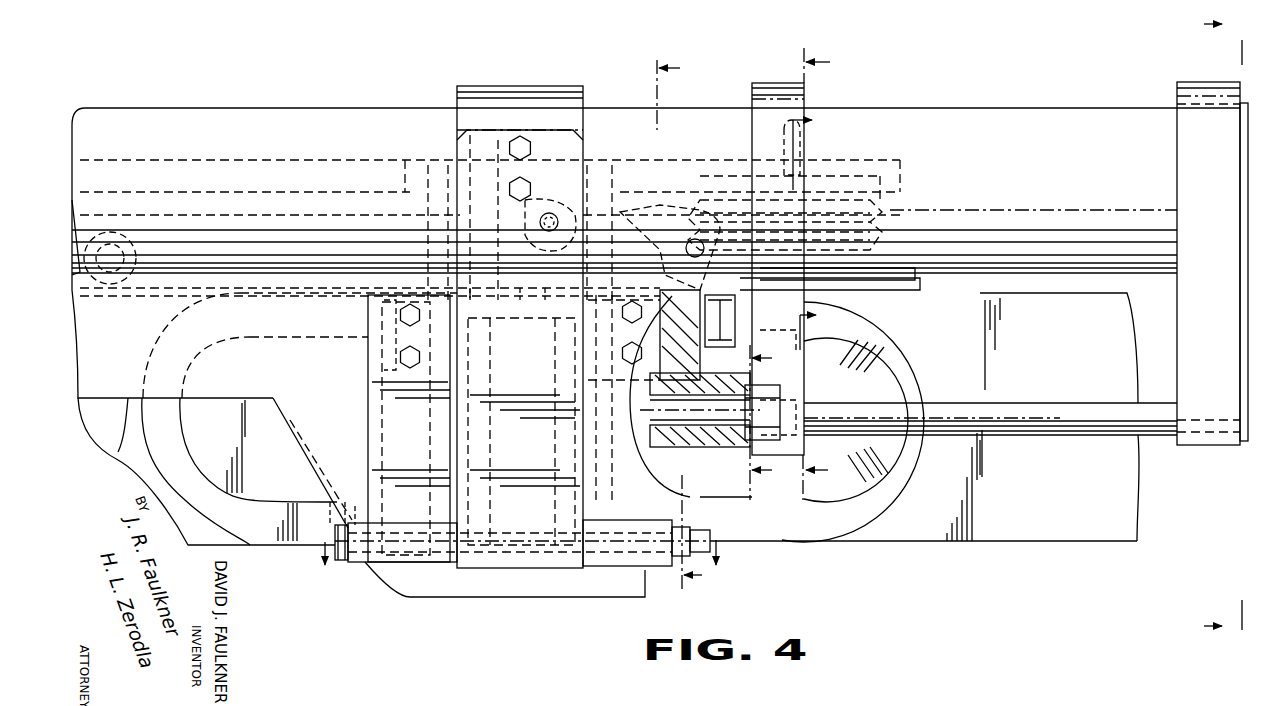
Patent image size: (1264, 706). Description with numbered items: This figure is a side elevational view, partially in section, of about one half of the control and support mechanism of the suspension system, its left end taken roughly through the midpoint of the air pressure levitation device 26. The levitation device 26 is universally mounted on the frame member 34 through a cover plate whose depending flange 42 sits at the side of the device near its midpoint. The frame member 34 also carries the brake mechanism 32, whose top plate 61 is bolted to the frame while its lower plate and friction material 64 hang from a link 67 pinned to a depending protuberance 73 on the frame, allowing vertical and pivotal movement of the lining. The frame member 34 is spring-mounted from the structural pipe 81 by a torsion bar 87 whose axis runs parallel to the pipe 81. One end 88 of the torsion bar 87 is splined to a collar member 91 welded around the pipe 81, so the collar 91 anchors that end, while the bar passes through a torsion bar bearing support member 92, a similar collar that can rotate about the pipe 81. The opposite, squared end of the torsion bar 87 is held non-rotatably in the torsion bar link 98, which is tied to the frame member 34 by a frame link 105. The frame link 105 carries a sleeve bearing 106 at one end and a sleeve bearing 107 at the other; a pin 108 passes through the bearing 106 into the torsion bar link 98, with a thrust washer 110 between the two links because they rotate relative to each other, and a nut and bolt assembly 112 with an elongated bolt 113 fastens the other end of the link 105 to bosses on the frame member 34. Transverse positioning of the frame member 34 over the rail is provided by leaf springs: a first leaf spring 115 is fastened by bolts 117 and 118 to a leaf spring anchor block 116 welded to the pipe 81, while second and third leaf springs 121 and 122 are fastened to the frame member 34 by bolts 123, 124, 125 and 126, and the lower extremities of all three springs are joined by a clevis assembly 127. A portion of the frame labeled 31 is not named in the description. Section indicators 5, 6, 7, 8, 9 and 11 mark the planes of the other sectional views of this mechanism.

The air pressure levitation device 26 is at (258, 232).
The opening 31 is at (256, 466).
The brake mechanism 32 is at (888, 216).
The frame member 34 is at (120, 458).
The depending flange 42 is at (128, 250).
The top plate 61 is at (905, 278).
The friction material 64 is at (898, 284).
The link 67 is at (648, 212).
The depending protuberance 73 is at (550, 236).
The pipe 81 is at (1022, 106).
The torsion bar 87 is at (1158, 433).
The end of torsion bar 88 is at (1210, 446).
The collar member 91 is at (1177, 339).
The torsion bar bearing support member 92 is at (776, 96).
The torsion bar link 98 is at (740, 460).
The frame link 105 is at (665, 478).
The sleeve bearing 106 is at (690, 455).
The sleeve bearing 107 is at (680, 316).
The pin 108 is at (706, 446).
The thrust washer 110 is at (700, 380).
The nut and bolt assembly 112 is at (722, 322).
The elongated bolt 113 is at (398, 310).
The first leaf spring 115 is at (500, 135).
The leaf spring anchor block 116 is at (478, 86).
The bolt 117 is at (525, 140).
The bolt 118 is at (530, 188).
The second leaf spring 121 is at (386, 452).
The third leaf spring 122 is at (662, 445).
The bolt 123 is at (404, 320).
The bolt 124 is at (400, 356).
The bolt 125 is at (622, 318).
The bolt 126 is at (622, 358).
The clevis assembly 127 is at (366, 564).
The section line 5 is at (1215, 325).
The section line 6 is at (517, 558).
The section line 7 is at (811, 231).
The section line 8 is at (826, 274).
The section line 9 is at (766, 422).
The section line 11 is at (681, 331).